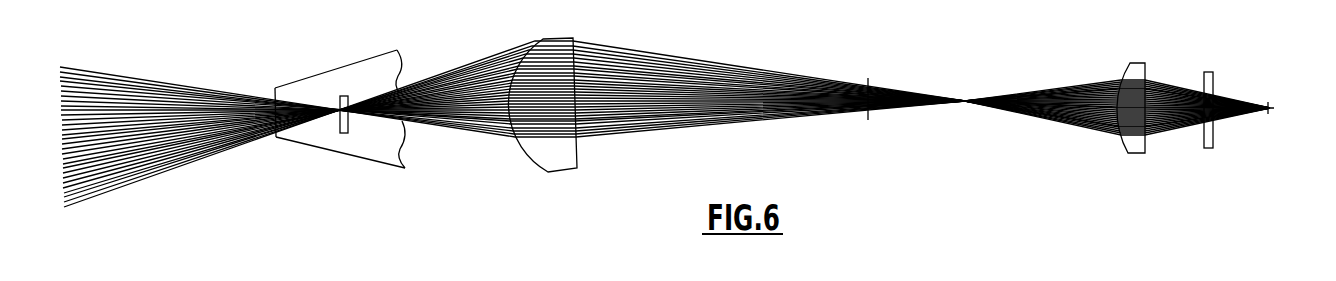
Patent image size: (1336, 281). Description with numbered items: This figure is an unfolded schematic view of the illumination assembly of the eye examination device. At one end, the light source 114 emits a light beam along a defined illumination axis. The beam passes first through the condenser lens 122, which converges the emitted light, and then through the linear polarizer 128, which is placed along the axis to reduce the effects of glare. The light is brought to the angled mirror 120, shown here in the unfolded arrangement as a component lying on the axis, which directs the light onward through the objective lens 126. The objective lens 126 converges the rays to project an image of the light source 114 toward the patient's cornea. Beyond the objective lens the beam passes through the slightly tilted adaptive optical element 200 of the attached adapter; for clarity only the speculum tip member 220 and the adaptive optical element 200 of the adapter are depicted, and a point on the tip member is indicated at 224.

The speculum tip member 220 is at (330, 70).
The plate surface 224 is at (275, 138).
The adaptive optical element 200 is at (347, 134).
The objective lens 126 is at (558, 38).
The mirror 120 is at (868, 120).
The condenser lens 122 is at (1138, 63).
The linear polarizer 128 is at (1210, 72).
The light source 114 is at (1262, 112).